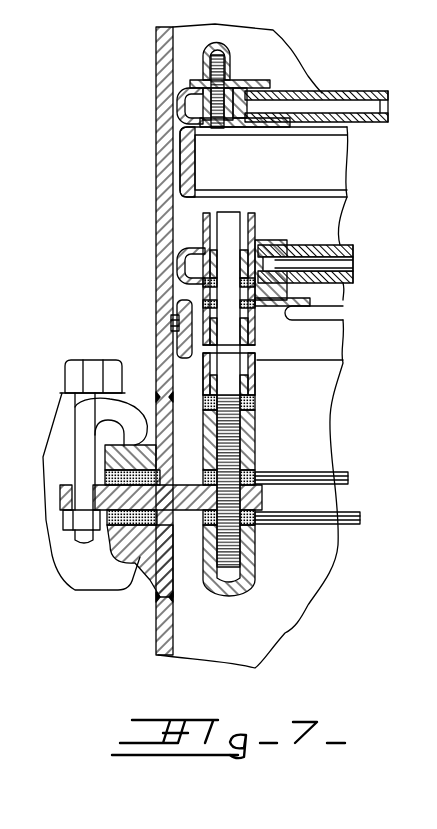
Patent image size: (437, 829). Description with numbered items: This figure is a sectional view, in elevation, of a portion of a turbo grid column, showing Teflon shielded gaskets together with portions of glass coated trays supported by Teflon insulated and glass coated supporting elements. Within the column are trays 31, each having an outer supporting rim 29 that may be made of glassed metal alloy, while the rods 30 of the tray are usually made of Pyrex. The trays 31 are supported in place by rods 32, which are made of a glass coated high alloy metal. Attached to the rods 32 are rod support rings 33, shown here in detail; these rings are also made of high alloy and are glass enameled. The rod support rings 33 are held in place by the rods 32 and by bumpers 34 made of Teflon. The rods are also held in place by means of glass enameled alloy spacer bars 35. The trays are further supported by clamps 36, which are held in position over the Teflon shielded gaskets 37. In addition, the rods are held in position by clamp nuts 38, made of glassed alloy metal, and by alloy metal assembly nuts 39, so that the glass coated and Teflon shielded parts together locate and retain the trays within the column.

The outer supporting rim 29 is at (202, 245).
The rod 30 is at (380, 120).
The tray 31 is at (310, 478).
The rod 32 is at (227, 368).
The rod support ring 33 is at (297, 303).
The bumper 34 is at (178, 318).
The spacer bar 35 is at (253, 222).
The clamp 36 is at (112, 410).
The Teflon shielded gasket 37 is at (137, 533).
The clamp nut 38 is at (230, 53).
The assembly nut 39 is at (250, 440).